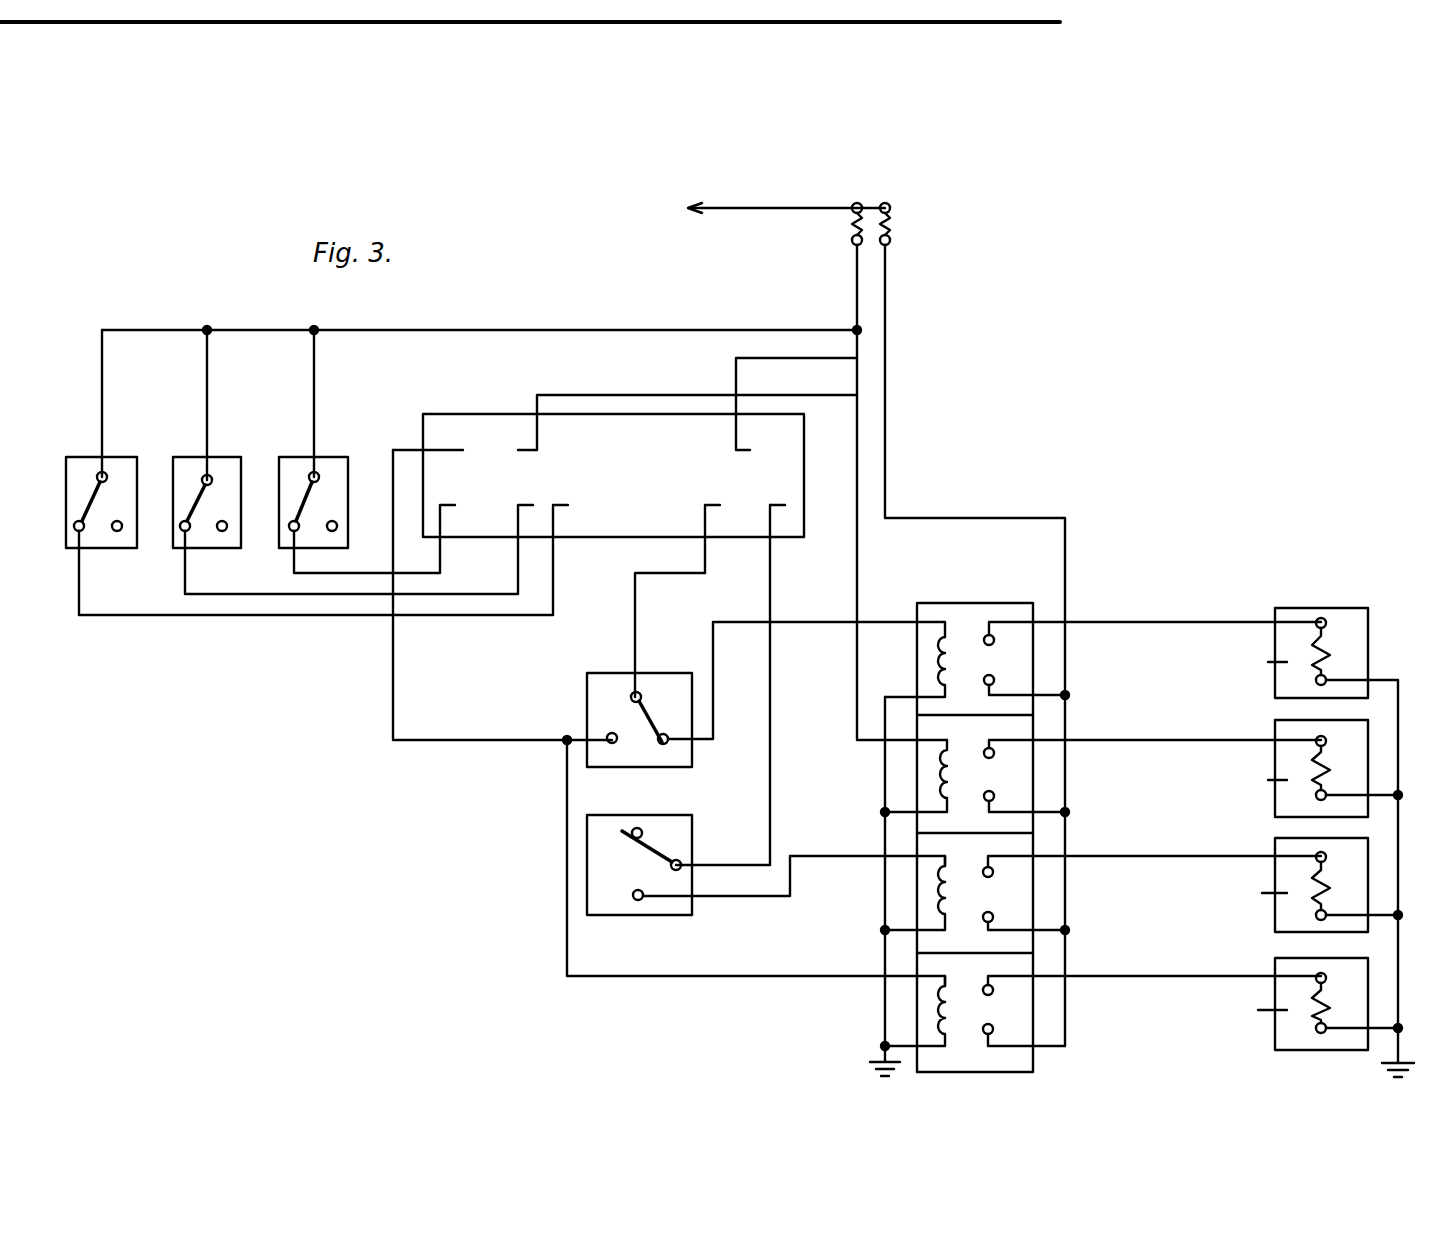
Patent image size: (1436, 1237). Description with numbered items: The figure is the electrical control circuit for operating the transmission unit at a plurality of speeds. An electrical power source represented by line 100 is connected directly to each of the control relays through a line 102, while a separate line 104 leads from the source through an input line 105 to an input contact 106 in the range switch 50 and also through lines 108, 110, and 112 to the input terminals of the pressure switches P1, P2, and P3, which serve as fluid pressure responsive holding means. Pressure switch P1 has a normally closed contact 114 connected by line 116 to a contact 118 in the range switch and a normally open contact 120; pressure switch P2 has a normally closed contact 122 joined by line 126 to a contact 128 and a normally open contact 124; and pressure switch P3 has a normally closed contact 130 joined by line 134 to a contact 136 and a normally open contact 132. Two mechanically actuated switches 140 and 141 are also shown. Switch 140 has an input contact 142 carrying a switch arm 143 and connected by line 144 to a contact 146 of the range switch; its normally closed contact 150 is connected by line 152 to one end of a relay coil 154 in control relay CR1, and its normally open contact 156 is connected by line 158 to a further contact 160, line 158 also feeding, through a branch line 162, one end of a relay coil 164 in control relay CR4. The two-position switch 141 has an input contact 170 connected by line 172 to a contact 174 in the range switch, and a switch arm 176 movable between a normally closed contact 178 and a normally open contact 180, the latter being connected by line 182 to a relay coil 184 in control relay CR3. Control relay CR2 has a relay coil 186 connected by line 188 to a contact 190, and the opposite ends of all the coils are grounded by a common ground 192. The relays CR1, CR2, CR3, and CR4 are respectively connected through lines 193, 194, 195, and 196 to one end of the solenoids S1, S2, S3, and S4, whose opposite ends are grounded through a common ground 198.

The range switch 50 is at (444, 400).
The electrical power source 100 is at (736, 208).
The line 102 is at (887, 272).
The line 104 is at (857, 279).
The input line 105 is at (736, 376).
The input contact 106 is at (733, 452).
The line 108 is at (103, 377).
The line 110 is at (208, 371).
The line 112 is at (315, 371).
The normally closed contact 114 is at (80, 533).
The line 116 is at (183, 617).
The contact 118 is at (553, 505).
The normally open contact 120 is at (117, 531).
The normally closed contact 122 is at (184, 531).
The normally open contact 124 is at (222, 531).
The line 126 is at (288, 595).
The contact 128 is at (527, 490).
The normally closed contact 130 is at (293, 531).
The normally open contact 132 is at (332, 531).
The line 134 is at (424, 576).
The contact 136 is at (455, 490).
The mechanical switch 140 is at (596, 712).
The mechanical switch 141 is at (595, 857).
The input contact 142 is at (632, 692).
The switch arm 143 is at (650, 717).
The line 144 is at (635, 587).
The contact 146 is at (705, 505).
The normally closed contact 150 is at (668, 741).
The line 152 is at (811, 622).
The relay coil 154 is at (955, 645).
The normally open contact 156 is at (612, 743).
The line 158 is at (412, 742).
The contact 160 is at (453, 449).
The branch line 162 is at (567, 799).
The relay coil 164 is at (958, 1010).
The input contact 170 is at (679, 860).
The line 172 is at (770, 730).
The contact 174 is at (770, 505).
The switch arm 176 is at (637, 838).
The normally closed contact 178 is at (640, 829).
The normally open contact 180 is at (638, 900).
The line 182 is at (826, 857).
The relay coil 184 is at (957, 888).
The relay coil 186 is at (958, 776).
The line 188 is at (857, 548).
The contact 190 is at (533, 441).
The common ground 192 is at (885, 1002).
The line 193 is at (1160, 622).
The line 194 is at (1156, 740).
The line 195 is at (1145, 856).
The line 196 is at (1153, 976).
The common ground 198 is at (1417, 677).
The pressure switch P1 is at (104, 487).
The pressure switch P2 is at (210, 487).
The pressure switch P3 is at (317, 487).
The control relay CR1 is at (1020, 653).
The control relay CR2 is at (1018, 766).
The control relay CR3 is at (1020, 878).
The control relay CR4 is at (1020, 1060).
The solenoid S1 is at (1300, 653).
The solenoid S2 is at (1301, 768).
The solenoid S3 is at (1296, 885).
The solenoid S4 is at (1293, 1004).